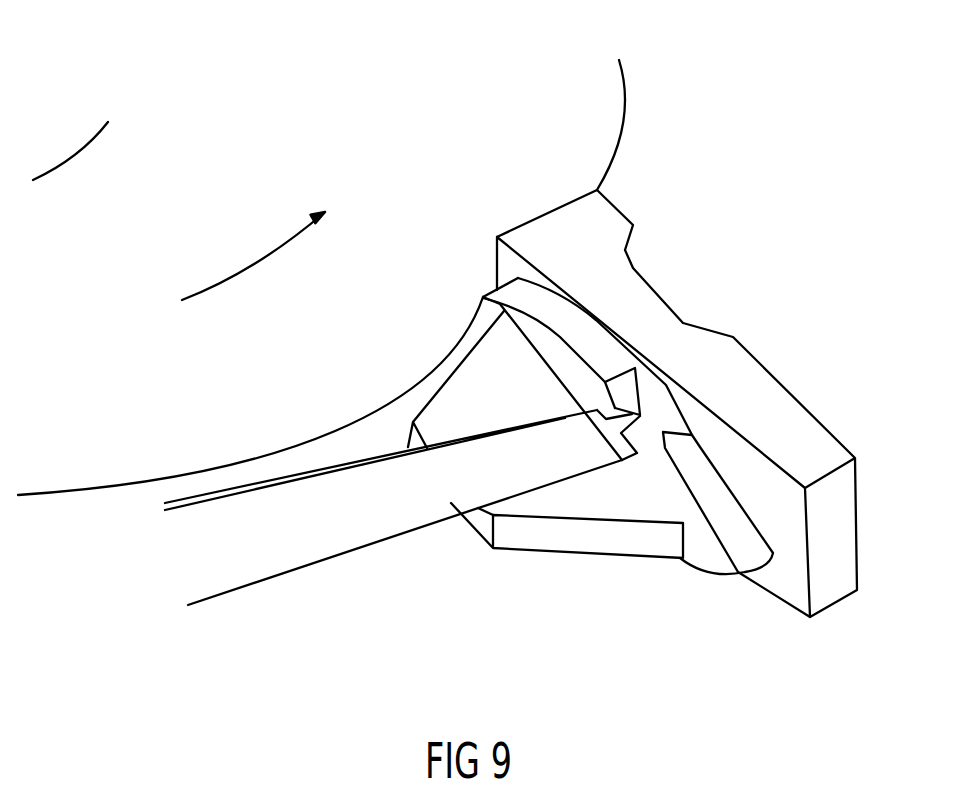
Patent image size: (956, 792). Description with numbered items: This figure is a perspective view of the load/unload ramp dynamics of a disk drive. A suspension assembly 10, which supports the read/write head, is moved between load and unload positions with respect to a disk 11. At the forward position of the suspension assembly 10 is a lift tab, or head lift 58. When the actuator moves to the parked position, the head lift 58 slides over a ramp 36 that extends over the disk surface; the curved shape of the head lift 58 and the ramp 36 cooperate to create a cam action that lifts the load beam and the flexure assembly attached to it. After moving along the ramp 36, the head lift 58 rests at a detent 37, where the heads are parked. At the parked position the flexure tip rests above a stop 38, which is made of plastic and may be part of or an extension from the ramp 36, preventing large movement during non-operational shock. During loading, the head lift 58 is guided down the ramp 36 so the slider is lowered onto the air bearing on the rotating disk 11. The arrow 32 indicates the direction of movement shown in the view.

The suspension assembly 10 is at (386, 546).
The disk 11 is at (563, 129).
The direction of rotation arrow 32 is at (267, 263).
The ramp 36 is at (560, 325).
The detent 37 is at (663, 432).
The stop 38 is at (627, 503).
The head lift 58 is at (643, 413).